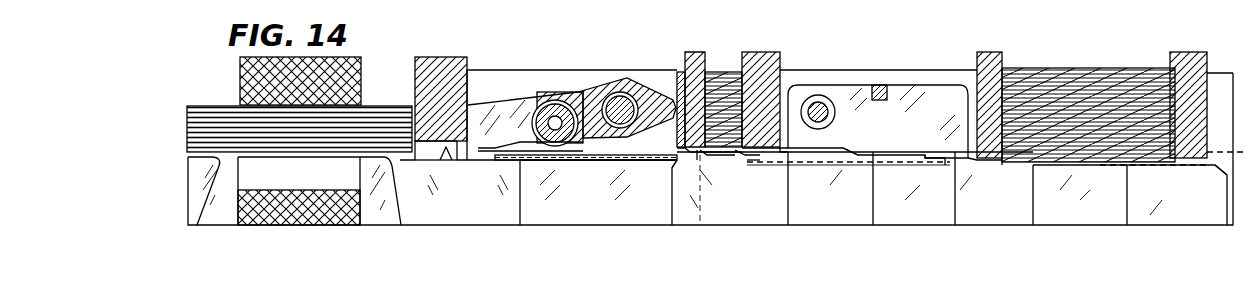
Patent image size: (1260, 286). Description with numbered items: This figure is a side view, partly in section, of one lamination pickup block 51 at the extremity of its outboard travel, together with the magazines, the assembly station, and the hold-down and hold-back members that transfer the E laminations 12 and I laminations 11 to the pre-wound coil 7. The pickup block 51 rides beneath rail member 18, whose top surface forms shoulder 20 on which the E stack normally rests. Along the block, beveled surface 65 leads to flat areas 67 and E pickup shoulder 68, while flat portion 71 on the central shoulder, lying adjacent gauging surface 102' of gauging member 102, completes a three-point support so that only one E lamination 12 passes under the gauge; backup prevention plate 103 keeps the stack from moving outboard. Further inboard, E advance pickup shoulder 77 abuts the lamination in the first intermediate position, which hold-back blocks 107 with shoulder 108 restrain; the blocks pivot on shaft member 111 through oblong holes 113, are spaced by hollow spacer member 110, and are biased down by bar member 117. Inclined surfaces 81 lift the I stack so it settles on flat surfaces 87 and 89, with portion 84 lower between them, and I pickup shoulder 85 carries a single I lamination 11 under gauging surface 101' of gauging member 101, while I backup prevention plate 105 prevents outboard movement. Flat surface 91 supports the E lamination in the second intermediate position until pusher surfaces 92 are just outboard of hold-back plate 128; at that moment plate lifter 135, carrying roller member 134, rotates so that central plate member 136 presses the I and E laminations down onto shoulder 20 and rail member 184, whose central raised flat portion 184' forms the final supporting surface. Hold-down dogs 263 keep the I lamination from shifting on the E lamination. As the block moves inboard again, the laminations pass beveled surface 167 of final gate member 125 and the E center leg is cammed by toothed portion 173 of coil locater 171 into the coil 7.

The pre-wound coil 7 is at (360, 76).
The I lamination 11 is at (722, 72).
The E lamination 12 is at (1085, 68).
The rail or plate member 18 is at (590, 201).
The shoulder 20 is at (563, 161).
The lamination pickup block 51 is at (902, 208).
The beveled surface 65 is at (1217, 168).
The flat area 67 is at (1160, 167).
The E pickup shoulder 68 is at (1233, 152).
The flat portion 71 is at (1004, 165).
The E advance pickup shoulder 77 is at (937, 165).
The inclined surface 81 is at (862, 156).
The portion of shoulder 84 is at (838, 165).
The I pickup shoulder 85 is at (765, 165).
The flat surface 87 is at (740, 152).
The flat surface 89 is at (710, 151).
The flat surface 91 is at (697, 152).
The pusher surface 92 is at (675, 168).
The gauging member 101 is at (702, 86).
The gauging surface 101' is at (587, 148).
The gauging member 102 is at (1008, 92).
The gauging surface 102' is at (982, 175).
The backup prevention plate 103 is at (1188, 52).
The I backup prevention plate 105 is at (762, 53).
The hold-back block 107 is at (950, 121).
The shoulder 108 is at (920, 158).
The hollow spacer member 110 is at (830, 118).
The shaft member 111 is at (819, 95).
The oblong hole 113 is at (811, 122).
The bar member 117 is at (879, 85).
The final gate member 125 is at (445, 62).
The hold-back plate 128 is at (680, 72).
The roller member 134 is at (540, 110).
The plate lifter 135 is at (592, 88).
The central plate member 136 is at (492, 149).
The beveled surface 167 is at (446, 160).
The coil locater 171 is at (215, 214).
The toothed portion 173 is at (362, 158).
The rail member 184 is at (315, 160).
The central raised flat portion 184' is at (274, 171).
The lamination hold-down dog 263 is at (485, 106).